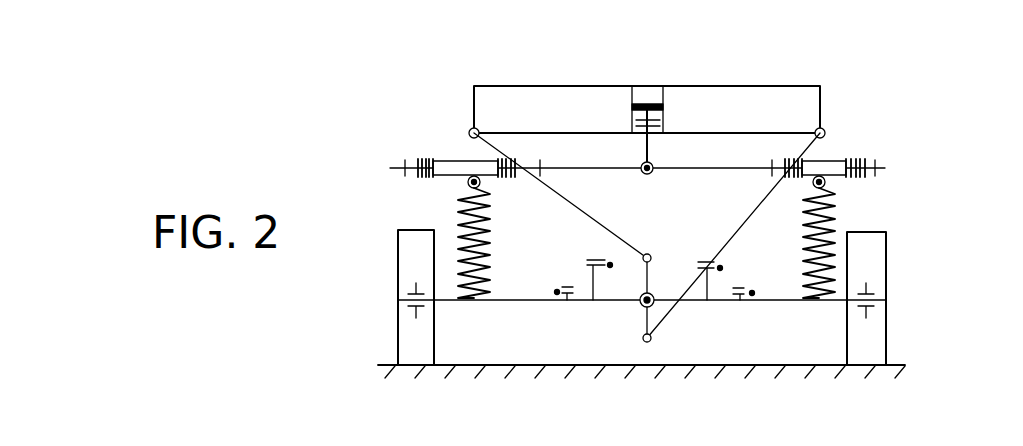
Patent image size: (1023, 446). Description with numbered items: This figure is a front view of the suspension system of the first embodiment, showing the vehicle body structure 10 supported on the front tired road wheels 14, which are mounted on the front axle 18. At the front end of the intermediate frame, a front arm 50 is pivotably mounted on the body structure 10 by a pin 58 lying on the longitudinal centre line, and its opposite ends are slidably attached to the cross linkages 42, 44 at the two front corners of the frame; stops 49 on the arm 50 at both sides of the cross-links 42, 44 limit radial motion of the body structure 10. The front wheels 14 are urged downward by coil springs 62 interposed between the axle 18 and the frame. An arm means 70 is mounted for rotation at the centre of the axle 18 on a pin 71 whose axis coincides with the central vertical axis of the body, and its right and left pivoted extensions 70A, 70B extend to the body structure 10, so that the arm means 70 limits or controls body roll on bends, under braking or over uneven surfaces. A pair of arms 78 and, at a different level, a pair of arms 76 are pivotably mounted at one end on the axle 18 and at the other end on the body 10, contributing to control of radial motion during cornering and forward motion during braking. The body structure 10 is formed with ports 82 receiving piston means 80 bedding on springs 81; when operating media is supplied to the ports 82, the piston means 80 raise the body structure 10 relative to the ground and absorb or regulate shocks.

The vehicle chassis/body structure 10 is at (808, 70).
The front tired road wheels 14 is at (405, 257).
The front axle 18 is at (518, 300).
The cross linkage 42 is at (450, 160).
The cross linkage 44 is at (832, 162).
The stops 49 is at (392, 167).
The front arm 50 is at (570, 168).
The pin 58 is at (653, 165).
The coil springs 62 is at (458, 205).
The arm means 70 is at (640, 294).
The right pivoted extension 70A is at (587, 210).
The left pivoted extension 70B is at (725, 244).
The pin 71 is at (637, 308).
The arms 76 is at (610, 265).
The arms 78 is at (565, 300).
The piston means 80 is at (688, 100).
The springs 81 is at (630, 108).
The ports 82 is at (648, 92).